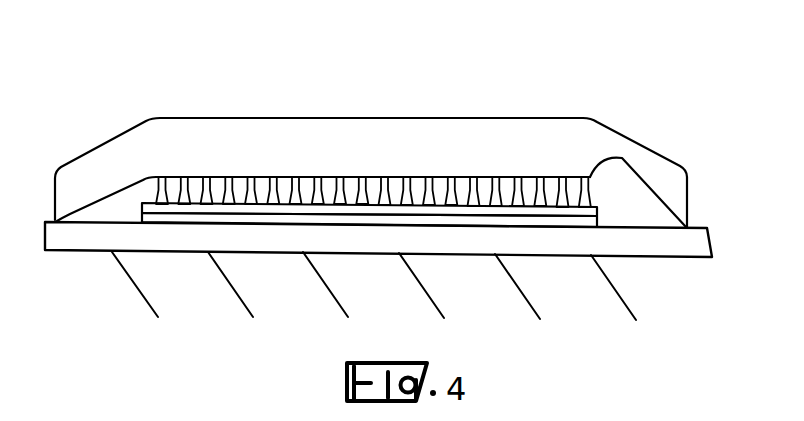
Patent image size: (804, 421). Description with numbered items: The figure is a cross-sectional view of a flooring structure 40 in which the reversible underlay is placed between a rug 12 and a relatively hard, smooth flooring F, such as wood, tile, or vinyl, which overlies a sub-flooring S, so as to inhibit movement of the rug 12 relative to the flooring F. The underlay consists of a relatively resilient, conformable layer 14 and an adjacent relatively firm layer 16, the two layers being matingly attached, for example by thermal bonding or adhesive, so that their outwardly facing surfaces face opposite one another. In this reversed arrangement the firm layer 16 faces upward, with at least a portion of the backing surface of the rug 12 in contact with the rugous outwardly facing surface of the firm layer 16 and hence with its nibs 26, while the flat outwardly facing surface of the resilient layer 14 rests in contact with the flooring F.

The flooring structure 40 is at (333, 98).
The rug 12 is at (371, 144).
The nibs 26 is at (622, 158).
The relatively firm layer 16 is at (596, 209).
The relatively resilient, conformable layer 14 is at (597, 224).
The flooring F is at (703, 250).
The sub-flooring S is at (374, 286).